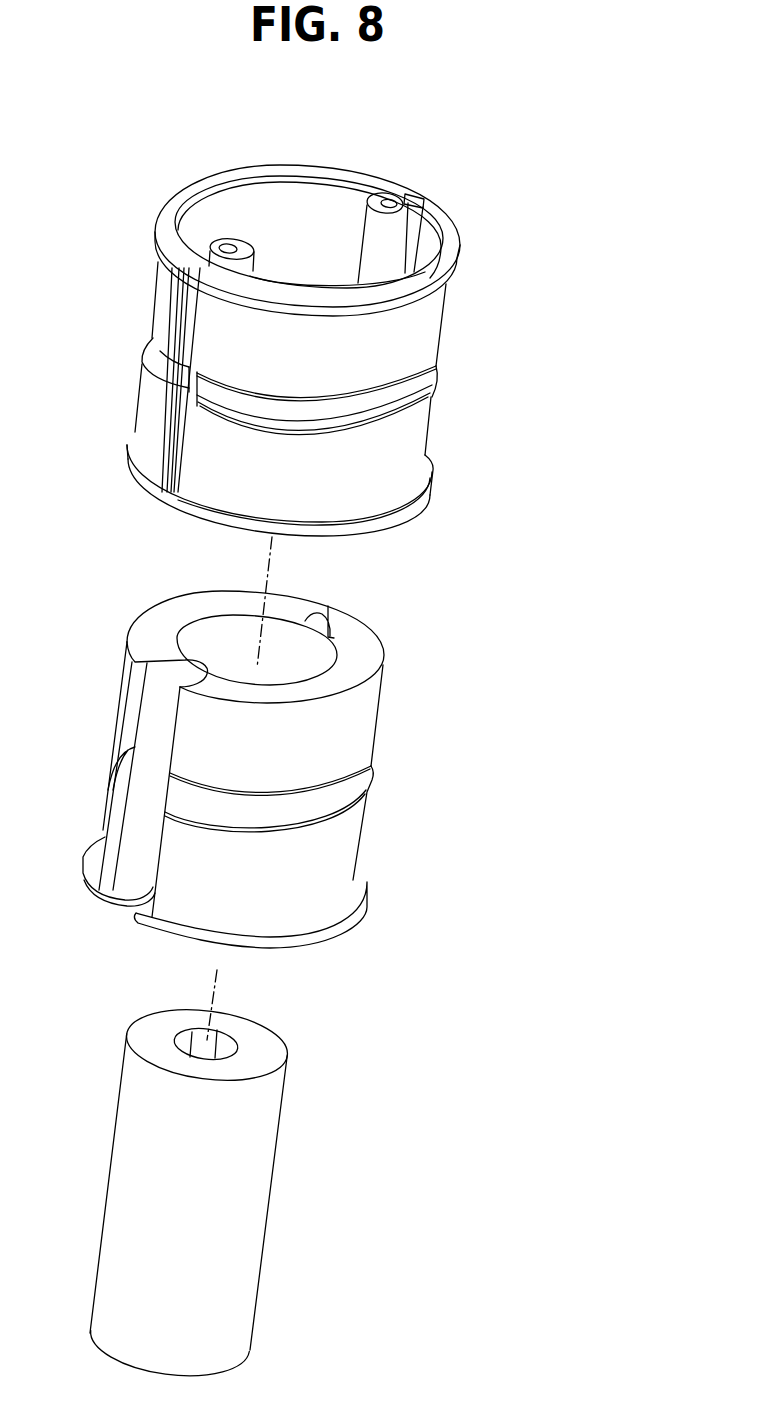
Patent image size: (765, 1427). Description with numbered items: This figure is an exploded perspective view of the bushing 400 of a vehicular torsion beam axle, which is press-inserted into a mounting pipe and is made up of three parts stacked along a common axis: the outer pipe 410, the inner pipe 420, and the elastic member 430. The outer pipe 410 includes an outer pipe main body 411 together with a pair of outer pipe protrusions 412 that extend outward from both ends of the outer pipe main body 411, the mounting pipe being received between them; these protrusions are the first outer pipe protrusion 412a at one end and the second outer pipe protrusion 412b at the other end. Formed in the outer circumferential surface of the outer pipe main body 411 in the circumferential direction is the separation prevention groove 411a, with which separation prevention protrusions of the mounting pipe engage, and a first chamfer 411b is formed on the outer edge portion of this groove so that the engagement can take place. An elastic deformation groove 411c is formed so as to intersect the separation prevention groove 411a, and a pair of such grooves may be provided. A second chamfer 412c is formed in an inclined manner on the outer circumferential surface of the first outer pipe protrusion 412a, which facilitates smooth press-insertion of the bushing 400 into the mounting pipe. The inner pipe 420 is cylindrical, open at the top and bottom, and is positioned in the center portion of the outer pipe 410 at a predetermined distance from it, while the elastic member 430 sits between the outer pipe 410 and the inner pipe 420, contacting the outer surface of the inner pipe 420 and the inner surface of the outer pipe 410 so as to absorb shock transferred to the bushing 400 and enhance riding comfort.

The bushing 400 is at (480, 103).
The outer pipe 410 is at (493, 217).
The outer pipe main body 411 is at (172, 298).
The separation prevention groove 411a is at (163, 373).
The first chamfer 411b is at (300, 393).
The elastic deformation groove 411c is at (387, 200).
The outer pipe protrusions 412 is at (558, 326).
The first outer pipe protrusion 412a is at (452, 282).
The second outer pipe protrusion 412b is at (415, 493).
The second chamfer 412c is at (168, 207).
The elastic member 430 is at (342, 846).
The inner pipe 420 is at (240, 1230).